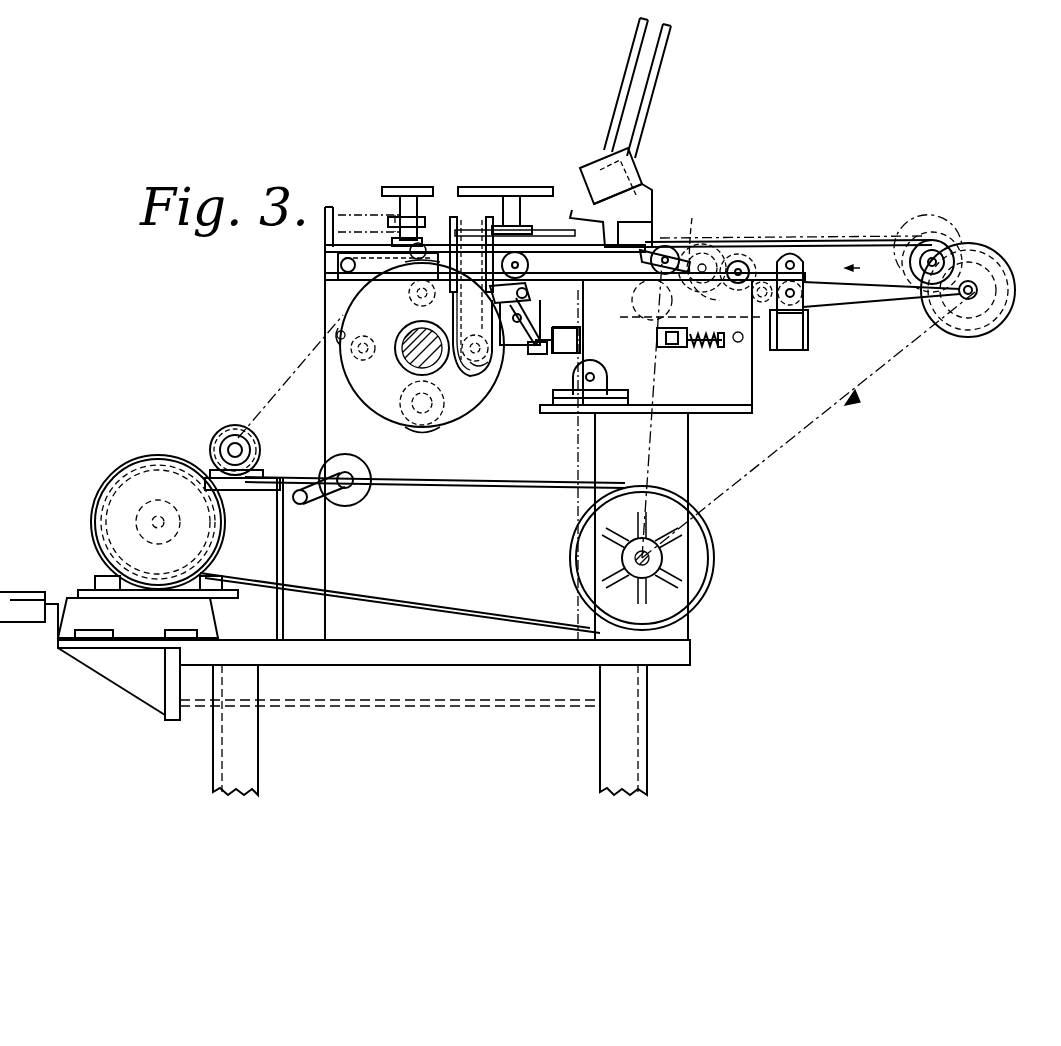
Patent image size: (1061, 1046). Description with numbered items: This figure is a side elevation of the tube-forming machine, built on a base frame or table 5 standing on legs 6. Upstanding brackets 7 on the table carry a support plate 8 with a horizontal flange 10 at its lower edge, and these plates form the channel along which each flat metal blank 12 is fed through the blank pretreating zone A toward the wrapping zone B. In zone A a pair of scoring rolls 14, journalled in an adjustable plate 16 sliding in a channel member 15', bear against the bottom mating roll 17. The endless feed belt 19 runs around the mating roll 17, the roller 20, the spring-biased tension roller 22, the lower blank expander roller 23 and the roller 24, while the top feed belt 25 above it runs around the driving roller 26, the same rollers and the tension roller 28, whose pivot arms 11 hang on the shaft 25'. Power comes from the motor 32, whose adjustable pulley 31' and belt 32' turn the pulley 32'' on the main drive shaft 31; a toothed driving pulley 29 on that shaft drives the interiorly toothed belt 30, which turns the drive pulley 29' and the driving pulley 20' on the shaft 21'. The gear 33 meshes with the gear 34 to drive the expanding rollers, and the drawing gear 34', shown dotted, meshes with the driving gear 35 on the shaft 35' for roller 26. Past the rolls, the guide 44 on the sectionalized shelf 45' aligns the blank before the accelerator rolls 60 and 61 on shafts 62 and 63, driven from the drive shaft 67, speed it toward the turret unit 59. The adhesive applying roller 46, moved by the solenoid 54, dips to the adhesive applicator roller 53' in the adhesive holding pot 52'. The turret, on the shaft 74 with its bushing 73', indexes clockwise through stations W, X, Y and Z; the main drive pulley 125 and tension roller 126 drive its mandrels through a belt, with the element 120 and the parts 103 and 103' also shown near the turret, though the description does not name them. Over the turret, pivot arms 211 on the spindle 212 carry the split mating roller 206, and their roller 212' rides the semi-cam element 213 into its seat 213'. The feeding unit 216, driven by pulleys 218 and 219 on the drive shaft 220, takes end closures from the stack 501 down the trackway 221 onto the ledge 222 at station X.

The base frame or table 5 is at (688, 662).
The legs 6 is at (250, 752).
The upstanding brackets 7 is at (688, 455).
The support plate 8 is at (596, 373).
The horizontal flange 10 is at (752, 409).
The pivot arms 11 is at (645, 248).
The flat metal blank 12 is at (1010, 282).
The scoring rolls 14 is at (805, 265).
The channel member 15' is at (812, 338).
The adjustable plate 16 is at (805, 295).
The bottom mating roll 17 is at (803, 316).
The endless feed belt 19 is at (888, 305).
The roller 20 is at (881, 319).
The driving pulley 20' is at (996, 353).
The shaft 21' is at (1000, 257).
The tension roller 22 is at (652, 312).
The lower blank expander roller 23 is at (718, 350).
The roller 24 is at (762, 282).
The top feed belt 25 is at (788, 241).
The shaft 25' is at (702, 235).
The driving roller 26 is at (928, 252).
The tension roller 28 is at (672, 250).
The toothed driving pulley 29 is at (696, 509).
The drive pulley 29' is at (740, 234).
The interiorly toothed belt 30 is at (648, 432).
The main drive shaft 31 is at (670, 558).
The adjustable pulley 31' is at (85, 465).
The motor 32 is at (138, 547).
The belt 32' is at (400, 594).
The pulley 32'' is at (545, 566).
The gear 33 is at (693, 247).
The gear 34 is at (745, 243).
The drawing gear 34' is at (1015, 330).
The driving gear 35 is at (941, 231).
The shaft 35' is at (956, 252).
The guide 44 is at (635, 262).
The sectionalized shelf 45' is at (632, 300).
The adhesive applying roller 46 is at (475, 300).
The adhesive holding pot 52' is at (525, 365).
The adhesive applicator roller 53' is at (561, 329).
The solenoid 54 is at (580, 347).
The turret unit 59 is at (340, 280).
The accelerator roll 60 is at (528, 265).
The accelerator roll 61 is at (533, 297).
The shaft 62 is at (502, 265).
The shaft 63 is at (482, 333).
The drive shaft 67 is at (238, 450).
The bushing 73' is at (386, 378).
The shaft 74 is at (403, 330).
The pin 103 is at (307, 330).
The pin 103' is at (305, 343).
The belt 120 is at (400, 476).
The main drive pulley 125 is at (218, 440).
The tension roller 126 is at (362, 500).
The split mating roller 206 is at (410, 300).
The pivot arms 211 is at (345, 247).
The spindle 212 is at (345, 262).
The roller 212' is at (438, 210).
The semi-cam element 213 is at (406, 311).
The seat 213' is at (458, 455).
The feeding unit 216 is at (642, 172).
The pulley 218 is at (400, 187).
The pulley 219 is at (527, 170).
The drive shaft 220 is at (510, 213).
The trackway 221 is at (471, 288).
The ledge 222 is at (478, 364).
The stack 501 is at (592, 150).
The blank pretreating zone A is at (780, 242).
The wrapping zone B is at (338, 300).
The station W is at (411, 289).
The station X is at (475, 343).
The station Y is at (426, 398).
The station Z is at (361, 353).